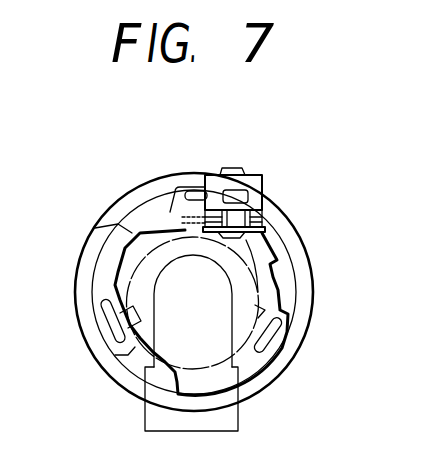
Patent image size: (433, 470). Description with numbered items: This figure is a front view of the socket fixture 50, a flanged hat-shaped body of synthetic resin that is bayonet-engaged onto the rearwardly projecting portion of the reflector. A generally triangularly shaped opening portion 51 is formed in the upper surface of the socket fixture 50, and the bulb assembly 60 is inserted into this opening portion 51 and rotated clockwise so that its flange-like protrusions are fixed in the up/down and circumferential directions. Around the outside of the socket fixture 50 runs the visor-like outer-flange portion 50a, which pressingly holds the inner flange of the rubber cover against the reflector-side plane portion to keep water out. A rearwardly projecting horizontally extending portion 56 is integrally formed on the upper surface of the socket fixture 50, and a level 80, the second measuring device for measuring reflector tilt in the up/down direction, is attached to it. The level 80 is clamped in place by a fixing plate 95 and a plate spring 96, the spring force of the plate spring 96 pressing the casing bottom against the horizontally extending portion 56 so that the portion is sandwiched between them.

The socket fixture 50 is at (157, 210).
The visor-like outer-flange portion 50a is at (293, 364).
The opening portion 51 is at (120, 263).
The horizontally extending portion 56 is at (267, 210).
The bulb assembly 60 is at (233, 302).
The level 80 is at (302, 165).
The fixing plate 95 is at (262, 230).
The plate spring 96 is at (267, 218).